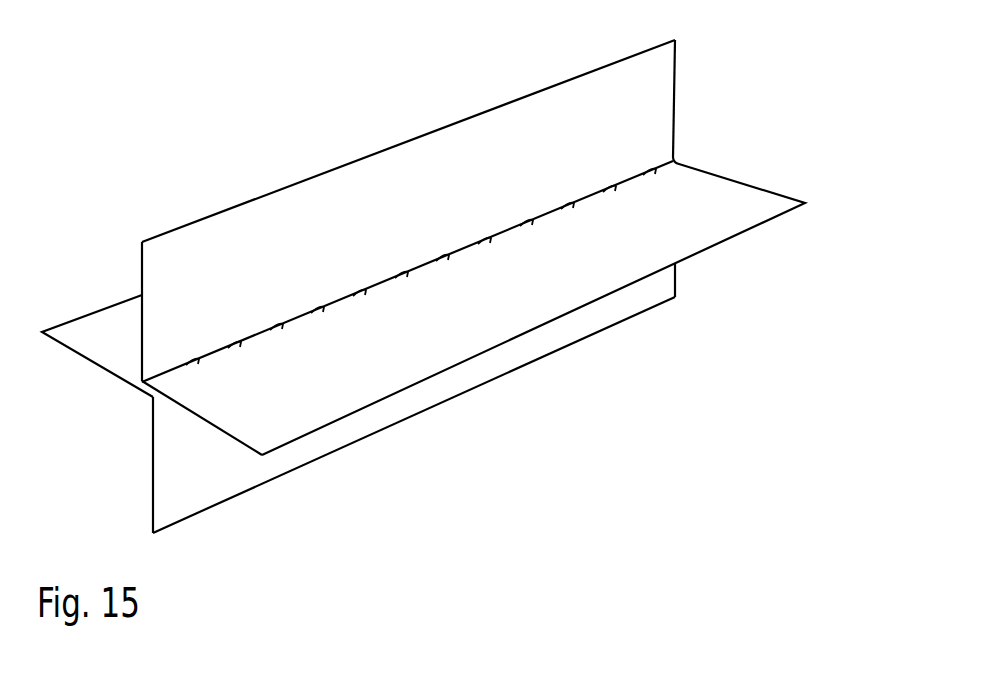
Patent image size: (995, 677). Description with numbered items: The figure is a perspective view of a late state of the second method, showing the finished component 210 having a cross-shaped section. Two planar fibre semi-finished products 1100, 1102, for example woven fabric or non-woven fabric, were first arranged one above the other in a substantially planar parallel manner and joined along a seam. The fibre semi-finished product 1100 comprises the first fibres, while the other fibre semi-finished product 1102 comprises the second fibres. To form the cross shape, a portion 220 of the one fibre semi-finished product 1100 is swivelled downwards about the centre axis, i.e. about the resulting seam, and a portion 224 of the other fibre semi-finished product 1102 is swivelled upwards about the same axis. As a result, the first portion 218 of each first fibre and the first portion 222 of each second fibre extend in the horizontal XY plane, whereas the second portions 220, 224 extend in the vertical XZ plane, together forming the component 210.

The component 210 is at (140, 123).
The first portion 218 is at (73, 335).
The second portion 220 is at (183, 500).
The first portion 222 is at (273, 428).
The second portion 224 is at (233, 218).
The fibre semi-finished product 1100 is at (438, 403).
The fibre semi-finished product 1102 is at (333, 167).